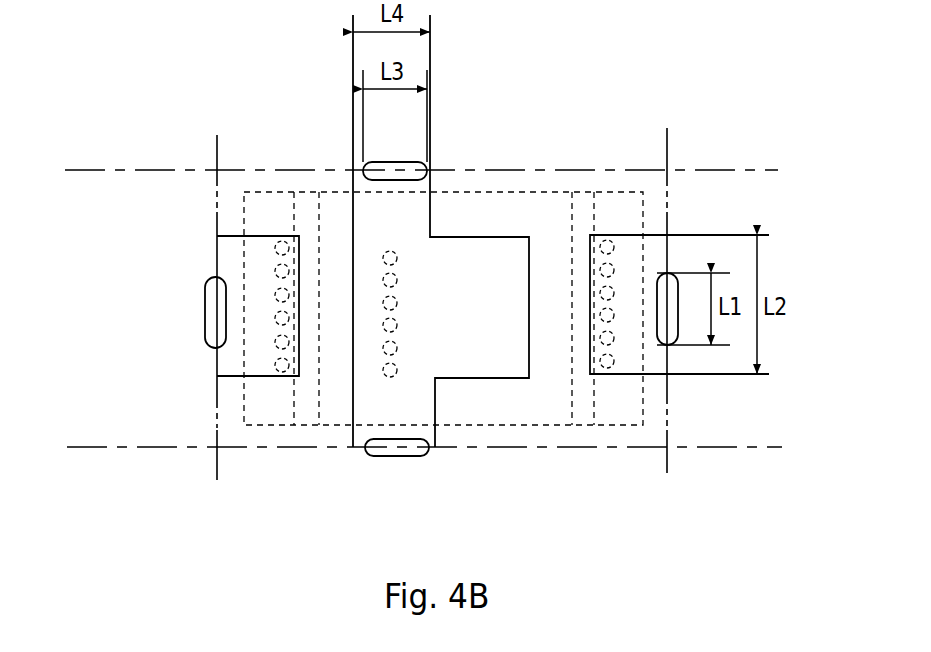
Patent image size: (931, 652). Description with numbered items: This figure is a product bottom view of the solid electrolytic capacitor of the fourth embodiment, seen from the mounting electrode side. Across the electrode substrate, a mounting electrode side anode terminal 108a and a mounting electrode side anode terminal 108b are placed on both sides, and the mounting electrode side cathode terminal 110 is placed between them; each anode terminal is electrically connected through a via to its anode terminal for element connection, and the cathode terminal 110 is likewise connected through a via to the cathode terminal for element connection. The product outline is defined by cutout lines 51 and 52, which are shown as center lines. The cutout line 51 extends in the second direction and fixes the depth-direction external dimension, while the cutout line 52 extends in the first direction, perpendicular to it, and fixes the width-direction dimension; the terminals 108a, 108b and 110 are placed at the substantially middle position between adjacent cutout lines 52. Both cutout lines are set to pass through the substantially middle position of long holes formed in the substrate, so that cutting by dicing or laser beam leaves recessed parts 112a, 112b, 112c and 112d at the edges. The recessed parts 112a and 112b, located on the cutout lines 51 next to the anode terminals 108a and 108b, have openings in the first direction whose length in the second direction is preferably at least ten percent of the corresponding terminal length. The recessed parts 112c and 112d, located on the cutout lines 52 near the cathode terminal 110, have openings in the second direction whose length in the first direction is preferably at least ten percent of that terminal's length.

The cutout line 51 is at (443, 288).
The cutout line 52 is at (440, 309).
The mounting electrode side anode terminal 108a is at (250, 280).
The mounting electrode side anode terminal 108b is at (627, 270).
The mounting electrode side cathode terminal 110 is at (443, 270).
The recessed part 112a is at (223, 312).
The recessed part 112b is at (657, 308).
The recessed part 112c is at (402, 180).
The recessed part 112d is at (408, 440).